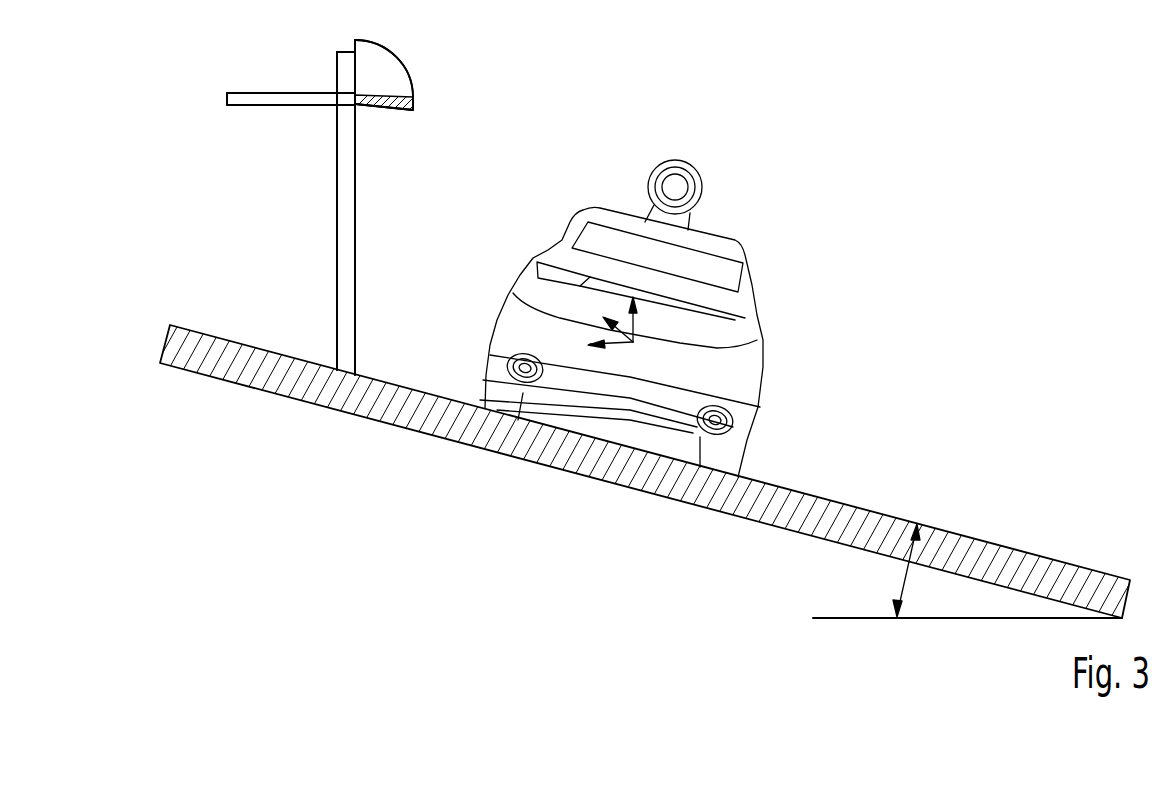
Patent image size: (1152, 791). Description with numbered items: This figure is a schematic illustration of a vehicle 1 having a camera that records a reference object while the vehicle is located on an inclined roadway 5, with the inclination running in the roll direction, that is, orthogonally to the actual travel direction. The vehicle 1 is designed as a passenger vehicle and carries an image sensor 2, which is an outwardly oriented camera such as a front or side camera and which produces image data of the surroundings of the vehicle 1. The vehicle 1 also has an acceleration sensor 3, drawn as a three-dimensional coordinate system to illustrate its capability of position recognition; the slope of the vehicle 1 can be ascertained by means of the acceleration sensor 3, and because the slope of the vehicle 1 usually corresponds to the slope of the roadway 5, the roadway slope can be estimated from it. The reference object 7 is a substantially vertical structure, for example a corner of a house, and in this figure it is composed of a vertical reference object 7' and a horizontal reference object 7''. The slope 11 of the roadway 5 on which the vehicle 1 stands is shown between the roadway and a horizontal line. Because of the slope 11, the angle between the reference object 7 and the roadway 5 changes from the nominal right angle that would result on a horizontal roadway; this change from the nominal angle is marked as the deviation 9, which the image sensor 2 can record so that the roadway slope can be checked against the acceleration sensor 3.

The vehicle 1 is at (758, 342).
The image sensor 2 is at (681, 162).
The acceleration sensor 3 is at (568, 379).
The roadway 5 is at (212, 350).
The reference object 7 is at (299, 200).
The vertical reference object 7' is at (325, 207).
The horizontal reference object 7'' is at (266, 98).
The deviation 9 is at (413, 104).
The slope 11 is at (902, 573).